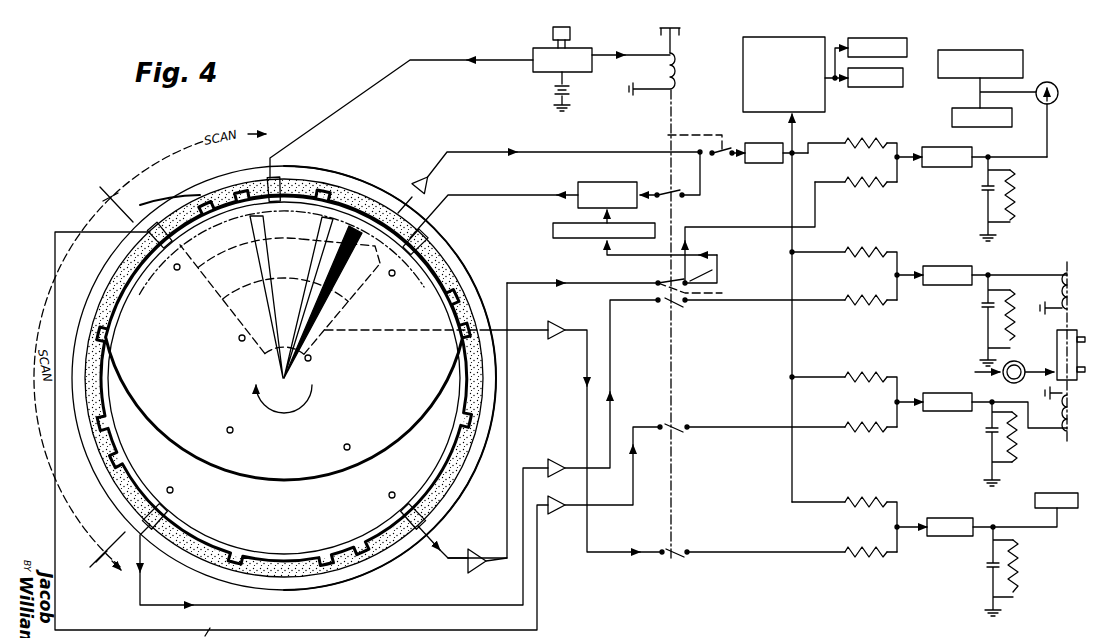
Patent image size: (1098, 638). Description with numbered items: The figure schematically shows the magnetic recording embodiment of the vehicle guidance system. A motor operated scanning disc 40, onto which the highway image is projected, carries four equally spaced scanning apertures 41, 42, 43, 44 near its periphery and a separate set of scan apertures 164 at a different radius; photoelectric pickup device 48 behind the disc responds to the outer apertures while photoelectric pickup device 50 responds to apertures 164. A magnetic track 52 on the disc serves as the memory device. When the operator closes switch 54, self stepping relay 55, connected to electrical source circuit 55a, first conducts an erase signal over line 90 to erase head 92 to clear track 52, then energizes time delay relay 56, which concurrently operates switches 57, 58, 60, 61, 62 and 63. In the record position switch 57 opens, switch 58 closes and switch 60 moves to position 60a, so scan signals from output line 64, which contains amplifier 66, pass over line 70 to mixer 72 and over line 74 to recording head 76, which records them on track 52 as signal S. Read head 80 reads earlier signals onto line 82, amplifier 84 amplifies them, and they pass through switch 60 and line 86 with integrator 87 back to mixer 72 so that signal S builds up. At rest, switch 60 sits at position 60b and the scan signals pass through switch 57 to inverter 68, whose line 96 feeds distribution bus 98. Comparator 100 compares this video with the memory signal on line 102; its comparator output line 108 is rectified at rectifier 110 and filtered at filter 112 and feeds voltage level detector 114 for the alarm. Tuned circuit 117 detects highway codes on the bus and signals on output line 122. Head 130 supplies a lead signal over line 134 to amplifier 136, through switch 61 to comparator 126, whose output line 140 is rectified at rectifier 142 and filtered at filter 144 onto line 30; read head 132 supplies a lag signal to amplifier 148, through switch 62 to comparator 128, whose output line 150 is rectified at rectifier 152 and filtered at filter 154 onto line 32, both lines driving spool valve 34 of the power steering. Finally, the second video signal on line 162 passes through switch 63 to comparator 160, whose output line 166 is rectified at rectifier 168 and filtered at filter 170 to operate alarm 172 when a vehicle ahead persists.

The line 30 is at (1028, 272).
The line 32 is at (1048, 430).
The spool valve 34 is at (1072, 331).
The scanning disc 40 is at (292, 470).
The scanning aperture 41 is at (176, 270).
The scanning aperture 42 is at (394, 276).
The scanning aperture 43 is at (392, 492).
The scanning aperture 44 is at (173, 488).
The photoelectric pickup device 48 is at (222, 253).
The photoelectric pickup device 50 is at (238, 320).
The magnetic track 52 is at (178, 208).
The switch 54 is at (570, 33).
The self stepping relay 55 is at (533, 63).
The electrical source circuit 55a is at (553, 94).
The time delay relay 56 is at (678, 58).
The switch 57 is at (720, 160).
The switch 58 is at (670, 190).
The switch 60 is at (655, 282).
The switch position 60a is at (704, 291).
The switch position 60b is at (712, 268).
The switch 61 is at (678, 308).
The switch 62 is at (678, 431).
The switch 63 is at (676, 557).
The output line 64 is at (407, 200).
The amplifier 66 is at (416, 176).
The inverter 68 is at (762, 163).
The line 70 is at (688, 198).
The mixer 72 is at (600, 182).
The line 74 is at (497, 193).
The recording head 76 is at (428, 243).
The read head 80 is at (403, 518).
The line 82 is at (525, 284).
The amplifier 84 is at (472, 570).
The line 86 is at (618, 250).
The integrator 87 is at (553, 232).
The line 90 is at (368, 90).
The erase head 92 is at (280, 186).
The line 96 is at (788, 160).
The distribution bus 98 is at (791, 327).
The comparator 100 is at (890, 140).
The line 102 is at (744, 226).
The comparator output line 108 is at (904, 162).
The rectifier 110 is at (948, 168).
The filter 112 is at (1015, 198).
The voltage level detector 114 is at (1049, 82).
The tuned circuit 117 is at (796, 31).
The output line 122 is at (837, 82).
The comparator 126 is at (868, 250).
The comparator 128 is at (868, 375).
The head 130 is at (166, 520).
The read head 132 is at (160, 250).
The line 134 is at (384, 603).
The amplifier 136 is at (554, 456).
The output line 140 is at (905, 272).
The rectifier 142 is at (946, 265).
The filter 144 is at (986, 312).
The amplifier 148 is at (558, 514).
The output line 150 is at (905, 398).
The rectifier 152 is at (946, 392).
The filter 154 is at (990, 441).
The comparator 160 is at (866, 500).
The line 162 is at (529, 338).
The scan apertures 164 is at (240, 341).
The output line 166 is at (910, 532).
The rectifier 168 is at (960, 537).
The filter 170 is at (1020, 566).
The alarm 172 is at (1058, 492).
The signal S is at (103, 380).